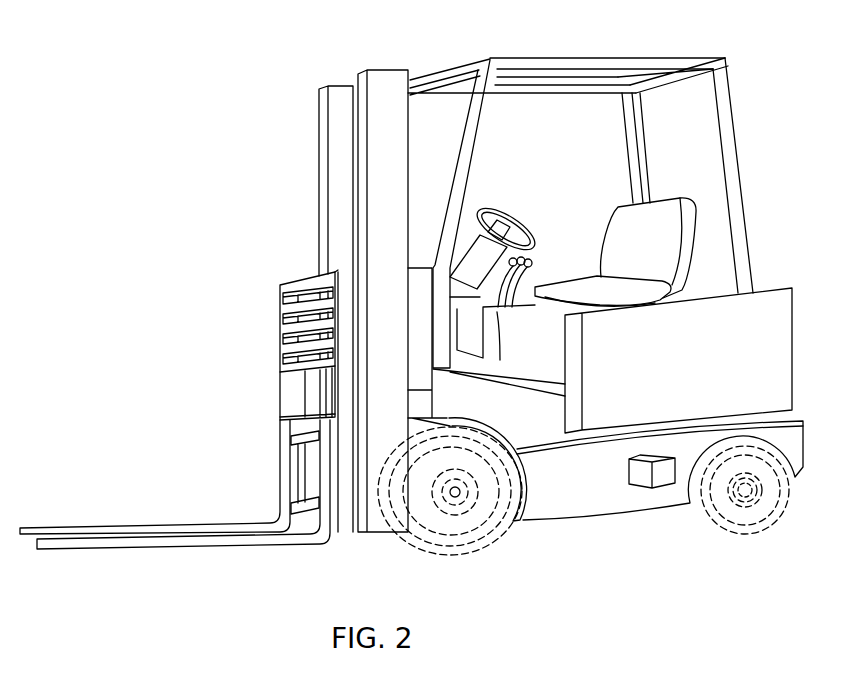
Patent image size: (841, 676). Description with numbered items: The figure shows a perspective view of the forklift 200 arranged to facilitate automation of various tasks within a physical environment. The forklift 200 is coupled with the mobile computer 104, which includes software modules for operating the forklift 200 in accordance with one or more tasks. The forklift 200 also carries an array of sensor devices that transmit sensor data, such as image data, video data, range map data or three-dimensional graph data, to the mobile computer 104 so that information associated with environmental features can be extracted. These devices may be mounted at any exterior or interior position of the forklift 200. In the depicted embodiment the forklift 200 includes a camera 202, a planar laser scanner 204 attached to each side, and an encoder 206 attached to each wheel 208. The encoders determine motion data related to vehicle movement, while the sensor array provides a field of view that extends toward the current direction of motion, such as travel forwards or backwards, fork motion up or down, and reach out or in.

The forklift 200 is at (178, 124).
The mobile computer 104 is at (305, 395).
The camera 202 is at (297, 429).
The wheel 208 is at (397, 510).
The encoder 206 is at (457, 497).
The planar laser scanner 204 is at (662, 478).